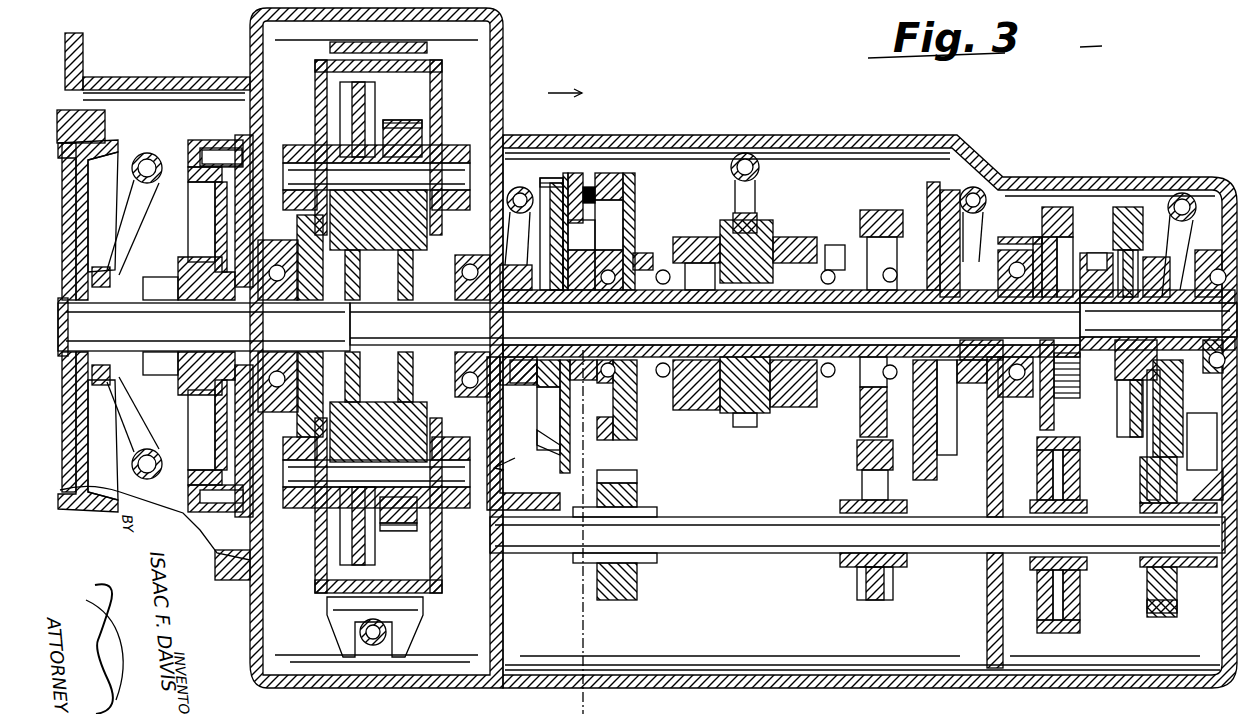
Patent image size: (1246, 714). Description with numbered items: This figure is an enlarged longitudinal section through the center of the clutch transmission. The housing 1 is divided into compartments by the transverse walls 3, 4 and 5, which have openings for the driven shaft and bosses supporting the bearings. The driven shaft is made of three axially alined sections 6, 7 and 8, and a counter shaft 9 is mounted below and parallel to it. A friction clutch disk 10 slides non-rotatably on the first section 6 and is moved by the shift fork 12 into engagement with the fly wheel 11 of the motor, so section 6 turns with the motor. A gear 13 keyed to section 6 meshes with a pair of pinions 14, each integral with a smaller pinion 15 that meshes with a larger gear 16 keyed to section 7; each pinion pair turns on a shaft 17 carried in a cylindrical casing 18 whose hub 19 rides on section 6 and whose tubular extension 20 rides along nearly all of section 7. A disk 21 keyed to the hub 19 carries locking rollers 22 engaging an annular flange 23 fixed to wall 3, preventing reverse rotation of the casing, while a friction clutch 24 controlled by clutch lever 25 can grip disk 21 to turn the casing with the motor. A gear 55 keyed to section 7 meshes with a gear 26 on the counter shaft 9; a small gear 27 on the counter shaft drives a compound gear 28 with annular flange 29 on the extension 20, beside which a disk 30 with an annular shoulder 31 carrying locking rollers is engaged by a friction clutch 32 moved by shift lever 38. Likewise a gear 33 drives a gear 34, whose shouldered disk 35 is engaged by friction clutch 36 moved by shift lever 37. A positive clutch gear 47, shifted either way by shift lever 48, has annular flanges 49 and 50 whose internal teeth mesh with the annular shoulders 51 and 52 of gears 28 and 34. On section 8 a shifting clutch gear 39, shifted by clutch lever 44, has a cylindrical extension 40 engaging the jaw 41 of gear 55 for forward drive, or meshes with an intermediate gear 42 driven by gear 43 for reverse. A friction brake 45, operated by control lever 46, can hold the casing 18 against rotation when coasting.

The housing 1 is at (585, 140).
The transverse wall 3 is at (262, 122).
The transverse wall 4 is at (538, 281).
The transverse wall 5 is at (996, 480).
The first section of driven shaft 6 is at (204, 327).
The second section of driven shaft 7 is at (715, 323).
The third section of driven shaft 8 is at (1158, 320).
The counter shaft 9 is at (857, 535).
The friction clutch disk 10 is at (88, 326).
The fly wheel 11 is at (98, 116).
The shift fork 12 is at (132, 220).
The gear 13 is at (278, 326).
The pinion 14 is at (370, 120).
The smaller pinion 15 is at (418, 130).
The larger gear 16 is at (432, 235).
The shaft 17 is at (376, 326).
The cylindrical casing 18 is at (442, 95).
The hub 19 is at (276, 326).
The tubular extension 20 is at (857, 322).
The disk 21 is at (253, 228).
The locking rollers 22 is at (218, 146).
The annular flange 23 is at (196, 150).
The friction clutch 24 is at (219, 360).
The clutch lever 25 is at (132, 422).
The gear 26 is at (1078, 472).
The small gear 27 is at (640, 492).
The compound gear 28 is at (636, 225).
The annular flange 29 is at (592, 186).
The disk 30 is at (568, 231).
The annular shoulder 31 is at (548, 418).
The friction clutch 32 is at (537, 438).
The gear 33 is at (855, 478).
The gear 34 is at (878, 210).
The shouldered disk 35 is at (933, 182).
The friction clutch 36 is at (940, 433).
The shift lever 37 is at (986, 292).
The shift lever 38 is at (523, 348).
The shifting clutch gear 39 is at (1130, 206).
The cylindrical extension 40 is at (1090, 385).
The jaw 41 is at (1085, 262).
The intermediate gear 42 is at (1150, 452).
The gear 43 is at (1155, 592).
The clutch lever 44 is at (1194, 346).
The friction brake 45 is at (430, 52).
The control lever 46 is at (388, 630).
The positive clutch gear 47 is at (775, 240).
The shift lever 48 is at (758, 222).
The annular flange 49 is at (700, 238).
The annular flange 50 is at (815, 240).
The annular shoulder 51 is at (648, 260).
The annular shoulder 52 is at (838, 260).
The gear 55 is at (1056, 206).